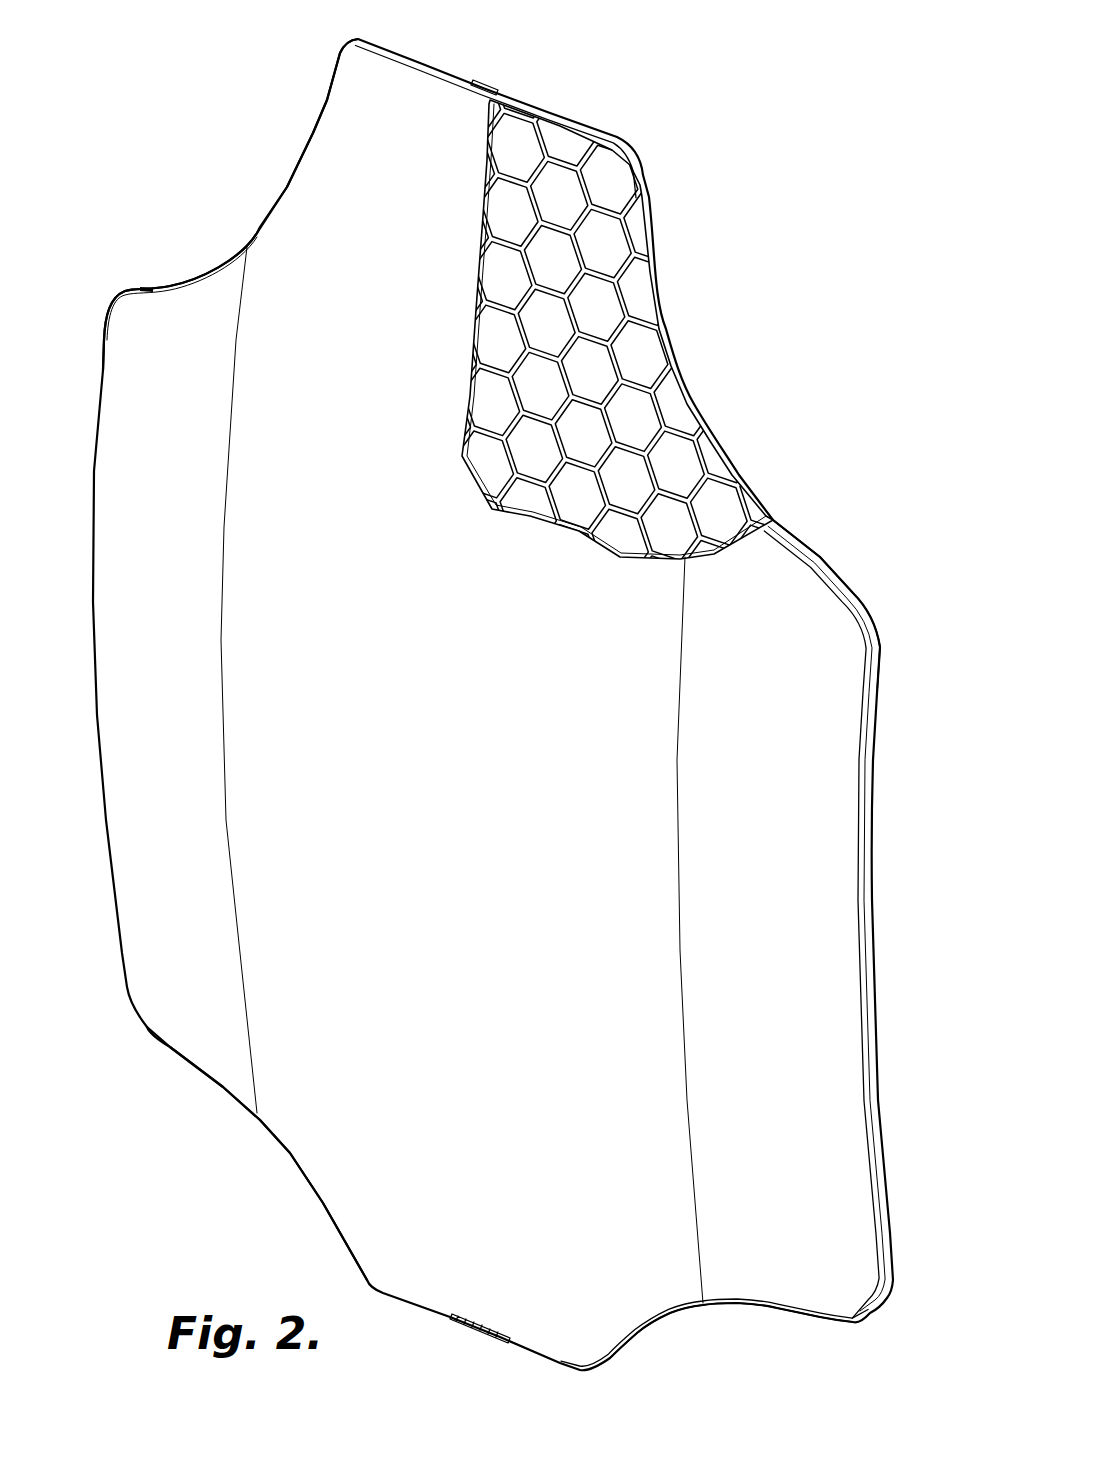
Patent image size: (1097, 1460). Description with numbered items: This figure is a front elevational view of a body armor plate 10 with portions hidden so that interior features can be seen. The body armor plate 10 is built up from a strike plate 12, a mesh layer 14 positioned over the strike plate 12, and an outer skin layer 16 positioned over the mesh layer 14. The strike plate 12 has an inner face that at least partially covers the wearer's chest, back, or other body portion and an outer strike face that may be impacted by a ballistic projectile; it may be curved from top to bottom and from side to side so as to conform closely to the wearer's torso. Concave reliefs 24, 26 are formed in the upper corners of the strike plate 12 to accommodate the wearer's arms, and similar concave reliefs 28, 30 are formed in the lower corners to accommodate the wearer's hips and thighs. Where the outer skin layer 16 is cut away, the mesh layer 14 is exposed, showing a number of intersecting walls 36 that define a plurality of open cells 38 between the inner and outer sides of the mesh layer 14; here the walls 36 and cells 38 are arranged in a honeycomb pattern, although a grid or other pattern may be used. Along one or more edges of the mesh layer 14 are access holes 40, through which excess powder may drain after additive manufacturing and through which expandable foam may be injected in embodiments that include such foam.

The body armor plate 10 is at (722, 122).
The strike plate 12 is at (667, 343).
The mesh layer 14 is at (593, 336).
The outer skin layer 16 is at (330, 113).
The concave relief 24 is at (257, 230).
The concave relief 26 is at (810, 547).
The concave relief 28 is at (320, 1207).
The concave relief 30 is at (753, 1307).
The intersecting walls 36 is at (620, 233).
The open cells 38 is at (657, 387).
The access holes 40 is at (483, 88).